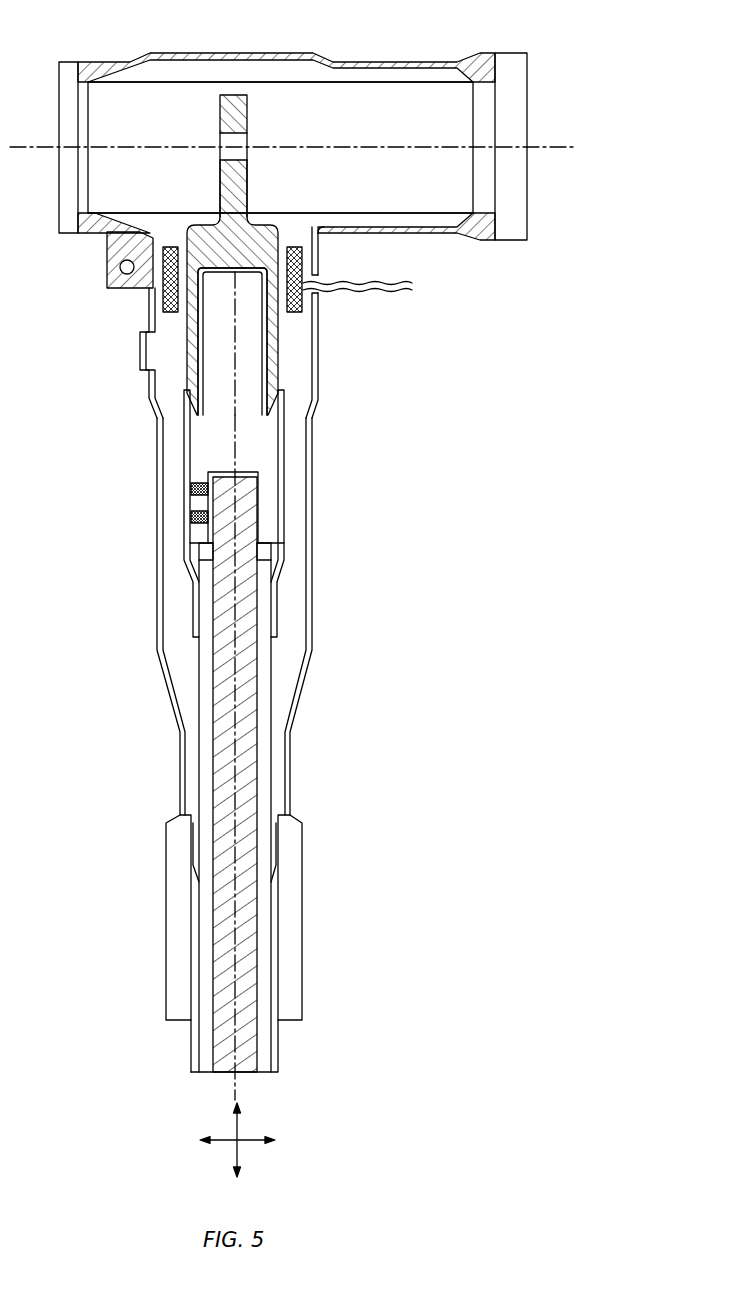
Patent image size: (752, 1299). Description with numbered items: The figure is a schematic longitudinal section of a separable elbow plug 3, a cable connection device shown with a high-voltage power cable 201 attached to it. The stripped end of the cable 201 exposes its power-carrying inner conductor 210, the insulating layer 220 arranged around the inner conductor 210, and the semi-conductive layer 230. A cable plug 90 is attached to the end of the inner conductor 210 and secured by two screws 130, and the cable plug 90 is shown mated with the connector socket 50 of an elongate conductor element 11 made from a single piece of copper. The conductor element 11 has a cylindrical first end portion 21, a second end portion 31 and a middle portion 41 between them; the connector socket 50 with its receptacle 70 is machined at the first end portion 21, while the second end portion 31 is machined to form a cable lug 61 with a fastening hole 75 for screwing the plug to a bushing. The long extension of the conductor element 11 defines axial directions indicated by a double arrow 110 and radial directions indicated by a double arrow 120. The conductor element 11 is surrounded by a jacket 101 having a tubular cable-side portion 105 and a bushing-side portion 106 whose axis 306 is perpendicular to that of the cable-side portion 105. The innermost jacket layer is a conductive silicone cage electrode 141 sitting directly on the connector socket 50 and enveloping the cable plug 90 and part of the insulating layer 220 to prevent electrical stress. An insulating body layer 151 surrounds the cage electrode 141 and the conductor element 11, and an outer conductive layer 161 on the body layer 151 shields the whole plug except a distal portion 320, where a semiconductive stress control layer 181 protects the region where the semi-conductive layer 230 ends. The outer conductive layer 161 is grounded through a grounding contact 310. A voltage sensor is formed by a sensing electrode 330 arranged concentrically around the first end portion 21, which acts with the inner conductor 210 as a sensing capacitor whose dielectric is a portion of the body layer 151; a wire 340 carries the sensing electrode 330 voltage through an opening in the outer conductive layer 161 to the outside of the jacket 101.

The separable elbow plug 3 is at (556, 405).
The conductor element 11 is at (264, 207).
The first end portion 21 is at (158, 344).
The second end portion 31 is at (206, 154).
The middle portion 41 is at (232, 208).
The connector socket 50 is at (278, 325).
The cable lug 61 is at (223, 100).
The receptacle 70 is at (237, 352).
The fastening hole 75 is at (224, 141).
The cable plug 90 is at (250, 392).
The jacket 101 is at (426, 40).
The cable-side portion 105 is at (392, 580).
The bushing-side portion 106 is at (578, 77).
The double arrow indicating axial directions 110 is at (235, 1148).
The double arrow indicating radial directions 120 is at (230, 1135).
The screws 130 is at (207, 515).
The cage electrode 141 is at (285, 437).
The body layer 151 is at (288, 70).
The outer conductive layer 161 is at (178, 56).
The stress control layer 181 is at (295, 818).
The high-voltage power cable 201 is at (160, 1049).
The inner conductor 210 is at (248, 1028).
The insulating layer 220 is at (268, 1050).
The semi-conductive layer 230 is at (280, 1072).
The axis of the bushing-side portion 306 is at (578, 142).
The grounding contact 310 is at (112, 275).
The distal portion 320 is at (340, 948).
The sensing electrode 330 is at (301, 263).
The wire 340 is at (400, 290).